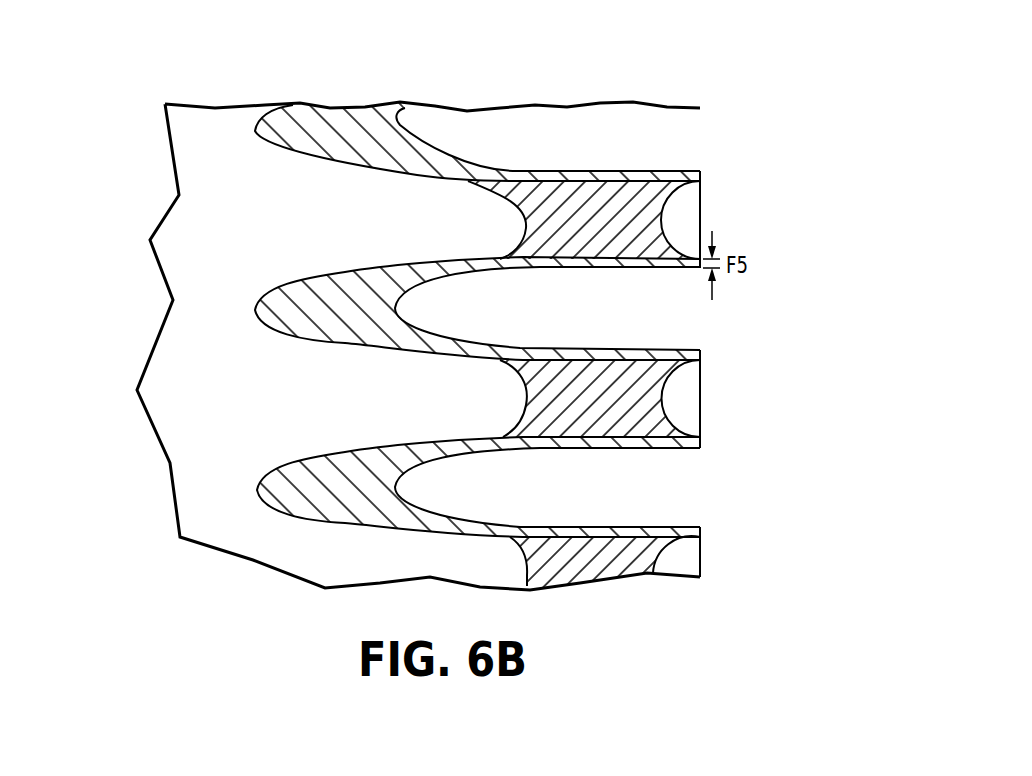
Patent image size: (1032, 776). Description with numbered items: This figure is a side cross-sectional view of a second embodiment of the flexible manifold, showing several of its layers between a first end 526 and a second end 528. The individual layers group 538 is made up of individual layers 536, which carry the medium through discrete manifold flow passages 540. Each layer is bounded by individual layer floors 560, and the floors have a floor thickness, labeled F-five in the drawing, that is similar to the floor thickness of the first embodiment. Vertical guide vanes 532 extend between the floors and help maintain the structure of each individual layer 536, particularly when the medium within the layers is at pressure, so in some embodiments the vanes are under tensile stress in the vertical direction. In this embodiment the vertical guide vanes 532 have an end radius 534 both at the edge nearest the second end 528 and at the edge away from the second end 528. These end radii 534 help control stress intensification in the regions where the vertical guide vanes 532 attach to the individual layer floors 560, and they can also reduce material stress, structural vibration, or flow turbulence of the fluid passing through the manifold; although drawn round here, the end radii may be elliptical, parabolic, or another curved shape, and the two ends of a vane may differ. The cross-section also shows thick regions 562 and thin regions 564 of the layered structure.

The first end 526 is at (104, 350).
The second end 528 is at (768, 321).
The vertical guide vanes 532 is at (563, 190).
The end radii 534 is at (523, 207).
The individual layers 536 is at (715, 348).
The individual layers group 538 is at (836, 105).
The discrete manifold flow passages 540 is at (268, 189).
The individual layer floors 560 is at (508, 177).
The thick regions 562 is at (366, 125).
The thin regions 564 is at (648, 172).